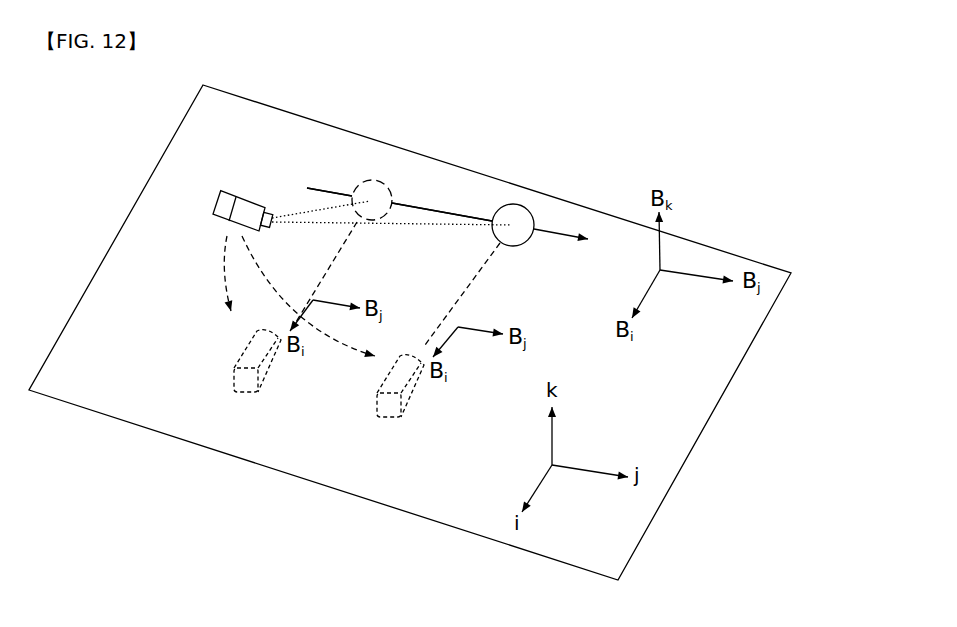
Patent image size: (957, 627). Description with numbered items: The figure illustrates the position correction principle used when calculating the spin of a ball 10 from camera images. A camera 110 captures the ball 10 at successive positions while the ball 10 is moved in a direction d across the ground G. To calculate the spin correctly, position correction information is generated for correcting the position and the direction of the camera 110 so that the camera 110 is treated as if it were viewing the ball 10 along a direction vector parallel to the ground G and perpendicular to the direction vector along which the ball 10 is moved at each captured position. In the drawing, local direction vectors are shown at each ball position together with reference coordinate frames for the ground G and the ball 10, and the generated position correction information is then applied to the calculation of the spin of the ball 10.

The ball 10 is at (387, 184).
The camera 110 is at (223, 222).
The ground G is at (475, 481).
The direction d is at (458, 220).